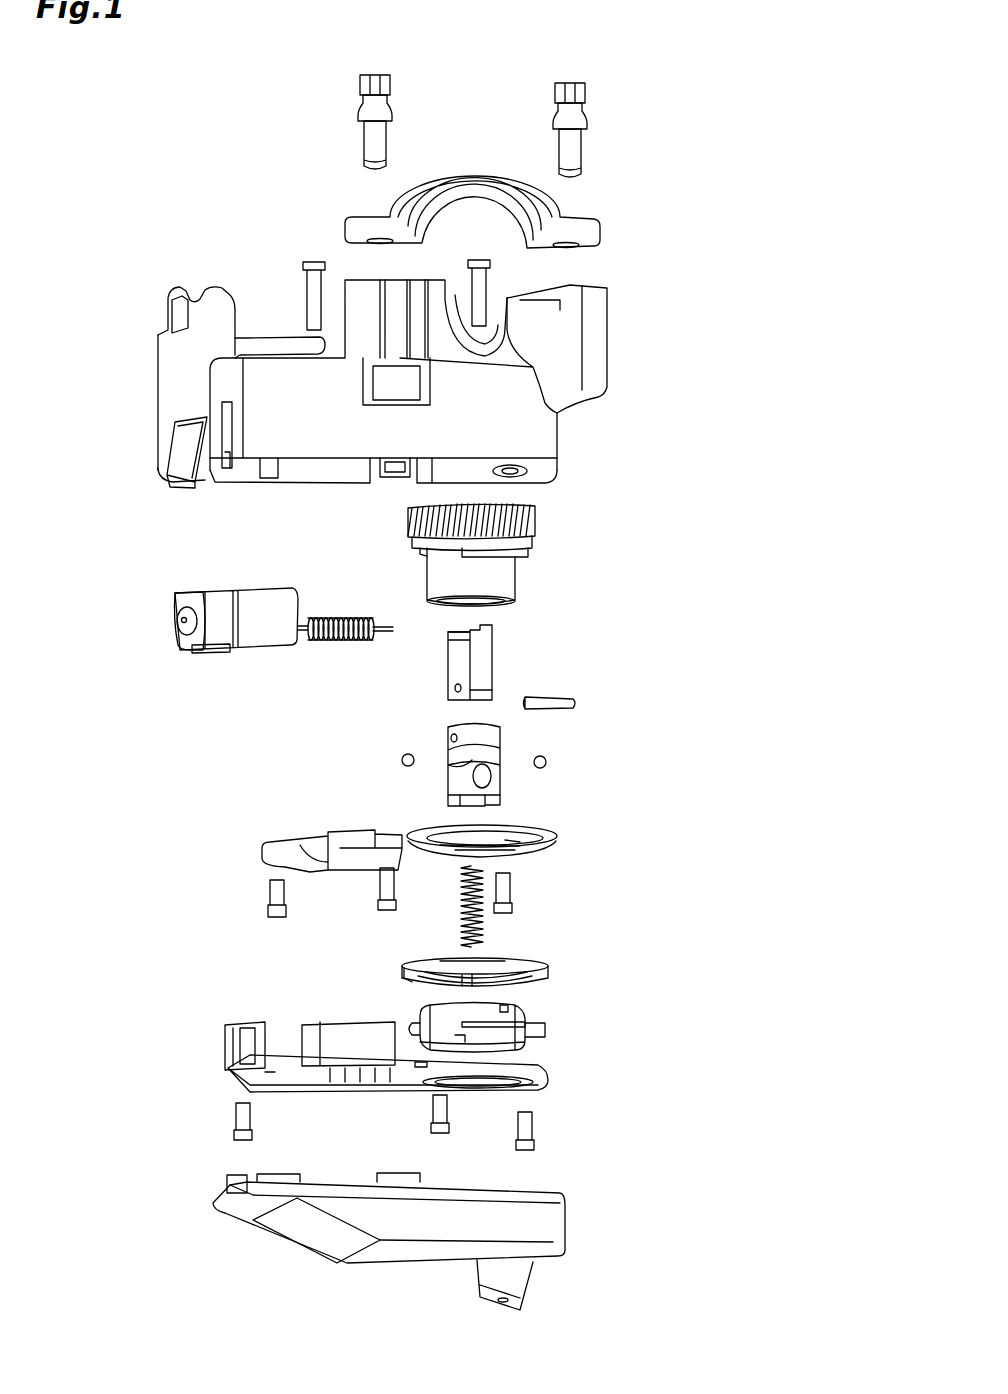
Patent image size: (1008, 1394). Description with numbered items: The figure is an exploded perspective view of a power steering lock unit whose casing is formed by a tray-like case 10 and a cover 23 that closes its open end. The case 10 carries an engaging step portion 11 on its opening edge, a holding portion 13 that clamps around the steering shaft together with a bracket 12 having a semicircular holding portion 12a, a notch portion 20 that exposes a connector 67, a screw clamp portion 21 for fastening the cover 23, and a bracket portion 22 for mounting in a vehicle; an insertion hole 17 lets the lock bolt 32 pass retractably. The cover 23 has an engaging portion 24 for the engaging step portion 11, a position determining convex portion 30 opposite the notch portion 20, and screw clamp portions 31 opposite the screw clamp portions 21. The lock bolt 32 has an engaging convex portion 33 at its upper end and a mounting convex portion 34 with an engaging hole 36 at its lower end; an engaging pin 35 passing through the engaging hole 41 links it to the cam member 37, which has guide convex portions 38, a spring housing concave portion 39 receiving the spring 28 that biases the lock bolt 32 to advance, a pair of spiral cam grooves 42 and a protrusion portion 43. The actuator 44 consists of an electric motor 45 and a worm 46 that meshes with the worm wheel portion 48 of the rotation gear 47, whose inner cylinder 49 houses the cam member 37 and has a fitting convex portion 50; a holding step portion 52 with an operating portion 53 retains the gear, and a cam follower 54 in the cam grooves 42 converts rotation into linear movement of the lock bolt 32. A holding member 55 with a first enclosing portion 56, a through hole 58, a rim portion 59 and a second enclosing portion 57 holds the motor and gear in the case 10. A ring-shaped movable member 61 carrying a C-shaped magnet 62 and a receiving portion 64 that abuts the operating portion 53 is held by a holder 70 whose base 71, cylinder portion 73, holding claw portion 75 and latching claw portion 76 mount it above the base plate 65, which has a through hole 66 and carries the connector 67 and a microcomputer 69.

The case 10 is at (145, 460).
The engaging step portion 11 is at (265, 484).
The bracket 12 is at (585, 225).
The holding portion 12a is at (457, 180).
The holding portion 13 is at (580, 320).
The insertion hole 17 is at (497, 330).
The notch portion 20 is at (210, 484).
The screw clamp portion 21 is at (385, 488).
The bracket portion 22 is at (170, 360).
The cover 23 is at (214, 1232).
The engaging portion 24 is at (340, 1182).
The spring 28 is at (484, 918).
The position determining convex portion 30 is at (228, 1182).
The screw clamp portions 31 is at (392, 1182).
The lock bolt 32 is at (510, 650).
The engaging convex portion 33 is at (448, 640).
The mounting convex portion 34 is at (488, 688).
The engaging pin 35 is at (570, 705).
The engaging hole 36 is at (452, 690).
The cam member 37 is at (514, 741).
The guide convex portions 38 is at (505, 798).
The spring housing concave portion 39 is at (460, 806).
The engaging hole 41 is at (448, 740).
The cam grooves 42 is at (490, 776).
The protrusion portion 43 is at (448, 770).
The actuator 44 is at (160, 592).
The electric motor 45 is at (172, 660).
The worm 46 is at (328, 645).
The rotation gear 47 is at (549, 517).
The worm wheel portion 48 is at (410, 540).
The inner cylinder 49 is at (505, 572).
The fitting convex portion 50 is at (448, 605).
The holding step portion 52 is at (420, 560).
The operating portion 53 is at (520, 557).
The cam follower 54 is at (400, 762).
The holding member 55 is at (246, 838).
The first enclosing portion 56 is at (548, 847).
The second enclosing portion 57 is at (333, 868).
The through hole 58 is at (516, 858).
The rim portion 59 is at (535, 830).
The movable member 61 is at (562, 967).
The magnet 62 is at (405, 978).
The receiving portion 64 is at (445, 960).
The base plate 65 is at (215, 1086).
The through hole 66 is at (488, 1092).
The connector 67 is at (238, 1025).
The microcomputer 69 is at (328, 1025).
The holder 70 is at (570, 1022).
The base 71 is at (555, 1030).
The cylinder portion 73 is at (522, 1005).
The holding claw portion 75 is at (520, 1045).
The latching claw portion 76 is at (430, 1022).